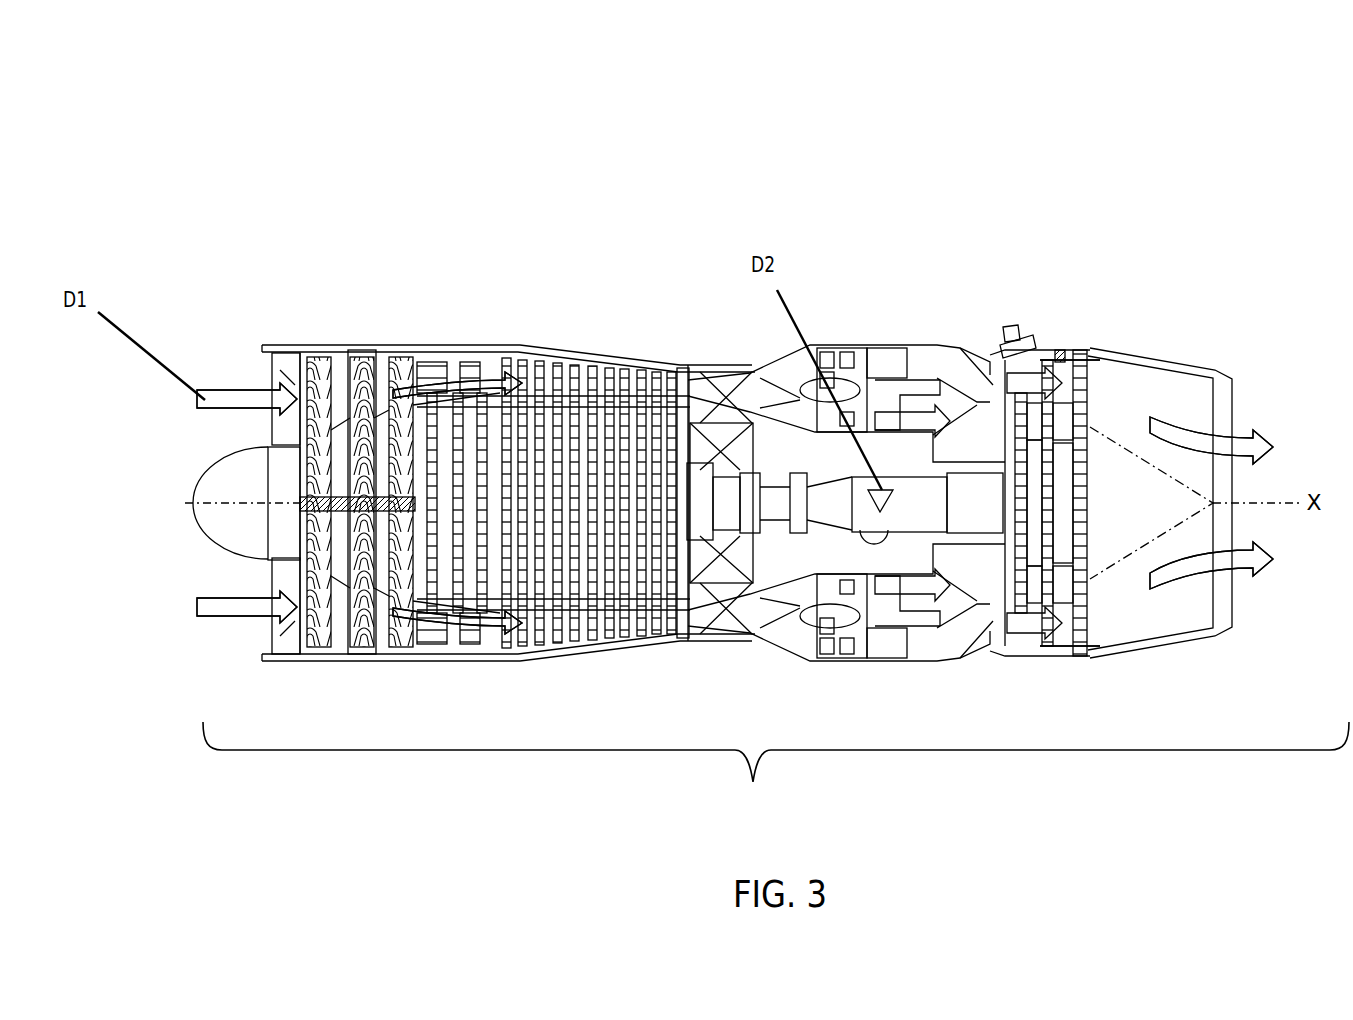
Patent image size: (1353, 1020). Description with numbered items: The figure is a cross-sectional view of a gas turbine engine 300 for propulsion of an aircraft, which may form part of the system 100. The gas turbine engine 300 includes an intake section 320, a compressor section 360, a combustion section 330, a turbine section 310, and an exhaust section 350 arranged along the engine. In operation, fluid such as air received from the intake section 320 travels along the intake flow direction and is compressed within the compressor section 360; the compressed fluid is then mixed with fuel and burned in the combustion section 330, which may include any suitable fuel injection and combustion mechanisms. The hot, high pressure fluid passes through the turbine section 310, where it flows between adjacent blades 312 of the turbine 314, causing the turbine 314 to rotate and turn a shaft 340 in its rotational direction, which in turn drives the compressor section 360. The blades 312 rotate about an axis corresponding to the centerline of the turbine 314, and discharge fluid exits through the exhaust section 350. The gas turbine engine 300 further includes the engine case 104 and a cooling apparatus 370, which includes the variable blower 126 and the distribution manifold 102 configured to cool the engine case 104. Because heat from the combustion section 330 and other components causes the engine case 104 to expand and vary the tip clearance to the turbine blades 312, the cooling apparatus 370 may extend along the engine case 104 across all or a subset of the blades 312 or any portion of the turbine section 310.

The system 100 is at (1058, 137).
The distribution manifold 102 is at (1030, 340).
The engine case 104 is at (1147, 365).
The variable blower 126 is at (1009, 338).
The gas turbine engine 300 is at (776, 767).
The turbine section 310 is at (1060, 360).
The blades 312 is at (1082, 480).
The turbine 314 is at (1103, 508).
The intake section 320 is at (258, 635).
The combustion section 330 is at (952, 363).
The shaft 340 is at (922, 503).
The exhaust section 350 is at (1222, 412).
The compressor section 360 is at (536, 355).
The cooling apparatus 370 is at (996, 347).